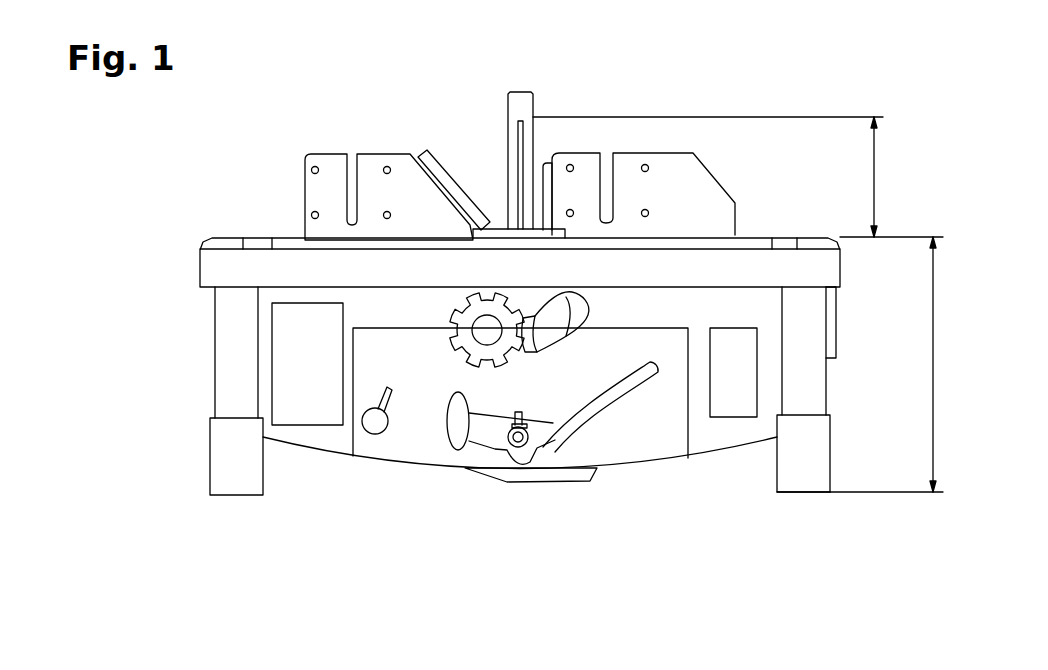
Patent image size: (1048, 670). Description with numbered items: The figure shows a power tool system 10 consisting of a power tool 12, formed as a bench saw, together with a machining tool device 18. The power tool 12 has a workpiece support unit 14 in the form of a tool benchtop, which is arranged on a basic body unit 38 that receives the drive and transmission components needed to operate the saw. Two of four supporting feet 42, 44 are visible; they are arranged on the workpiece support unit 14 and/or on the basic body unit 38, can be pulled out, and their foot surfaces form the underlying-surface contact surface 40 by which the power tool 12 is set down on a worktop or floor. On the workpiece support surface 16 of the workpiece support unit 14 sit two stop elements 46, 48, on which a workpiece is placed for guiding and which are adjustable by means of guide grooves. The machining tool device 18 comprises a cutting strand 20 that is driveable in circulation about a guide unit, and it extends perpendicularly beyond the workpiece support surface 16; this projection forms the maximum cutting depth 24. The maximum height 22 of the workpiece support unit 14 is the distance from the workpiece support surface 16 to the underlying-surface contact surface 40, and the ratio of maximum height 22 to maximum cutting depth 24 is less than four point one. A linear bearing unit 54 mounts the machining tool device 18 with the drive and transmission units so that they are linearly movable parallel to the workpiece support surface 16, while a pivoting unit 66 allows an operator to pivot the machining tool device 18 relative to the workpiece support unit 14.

The power tool system 10 is at (757, 575).
The power tool 12 is at (172, 510).
The workpiece support unit 14 is at (213, 237).
The workpiece support surface 16 is at (290, 238).
The machining tool device 18 is at (503, 132).
The cutting strand 20 is at (517, 177).
The maximum height 22 is at (935, 364).
The maximum cutting depth 24 is at (880, 177).
The basic body unit 38 is at (355, 467).
The underlying-surface contact surface 40 is at (802, 492).
The supporting foot 42 is at (788, 460).
The supporting foot 44 is at (230, 458).
The stop element 46 is at (373, 168).
The stop element 48 is at (700, 178).
The linear bearing unit 54 is at (448, 355).
The pivoting unit 66 is at (445, 442).